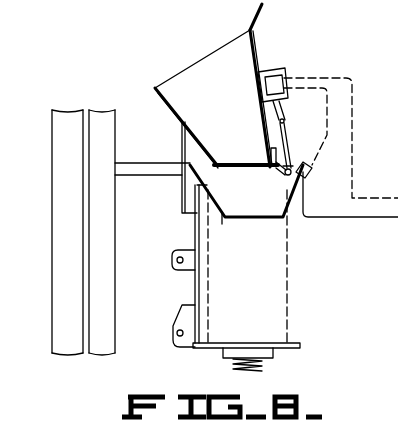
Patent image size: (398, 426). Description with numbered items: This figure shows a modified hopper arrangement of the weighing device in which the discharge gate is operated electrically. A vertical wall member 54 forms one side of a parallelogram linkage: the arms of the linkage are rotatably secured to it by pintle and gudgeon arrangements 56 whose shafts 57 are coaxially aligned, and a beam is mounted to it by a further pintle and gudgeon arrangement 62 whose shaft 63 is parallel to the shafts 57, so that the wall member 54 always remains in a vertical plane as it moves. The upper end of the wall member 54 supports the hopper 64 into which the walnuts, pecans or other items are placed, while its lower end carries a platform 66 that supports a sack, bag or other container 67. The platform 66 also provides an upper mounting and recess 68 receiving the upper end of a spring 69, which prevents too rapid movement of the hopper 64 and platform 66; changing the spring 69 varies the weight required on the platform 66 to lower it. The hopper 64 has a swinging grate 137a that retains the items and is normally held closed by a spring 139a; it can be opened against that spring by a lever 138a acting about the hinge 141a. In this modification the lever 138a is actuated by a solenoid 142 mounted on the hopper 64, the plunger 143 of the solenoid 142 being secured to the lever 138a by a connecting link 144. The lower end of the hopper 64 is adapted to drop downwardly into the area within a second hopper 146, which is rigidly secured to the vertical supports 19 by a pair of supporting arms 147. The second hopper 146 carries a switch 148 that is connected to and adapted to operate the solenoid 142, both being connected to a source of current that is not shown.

The vertical supports 19 is at (50, 208).
The supporting arms 147 is at (152, 163).
The hopper 64 is at (254, 44).
The solenoid 142 is at (284, 70).
The plunger 143 is at (285, 107).
The connecting link 144 is at (289, 130).
The lever 138a is at (288, 165).
The swinging grate 137a is at (248, 164).
The spring 139a is at (270, 171).
The hinge 141a is at (272, 178).
The second hopper 146 is at (231, 228).
The switch 148 is at (313, 171).
The vertical wall member 54 is at (194, 229).
The pintle and gudgeon arrangements 56 is at (173, 266).
The shafts 57 is at (176, 256).
The pintle and gudgeon arrangement 62 is at (181, 307).
The shaft 63 is at (177, 332).
The container 67 is at (290, 263).
The platform 66 is at (299, 342).
The recess 68 is at (272, 354).
The spring 69 is at (266, 366).